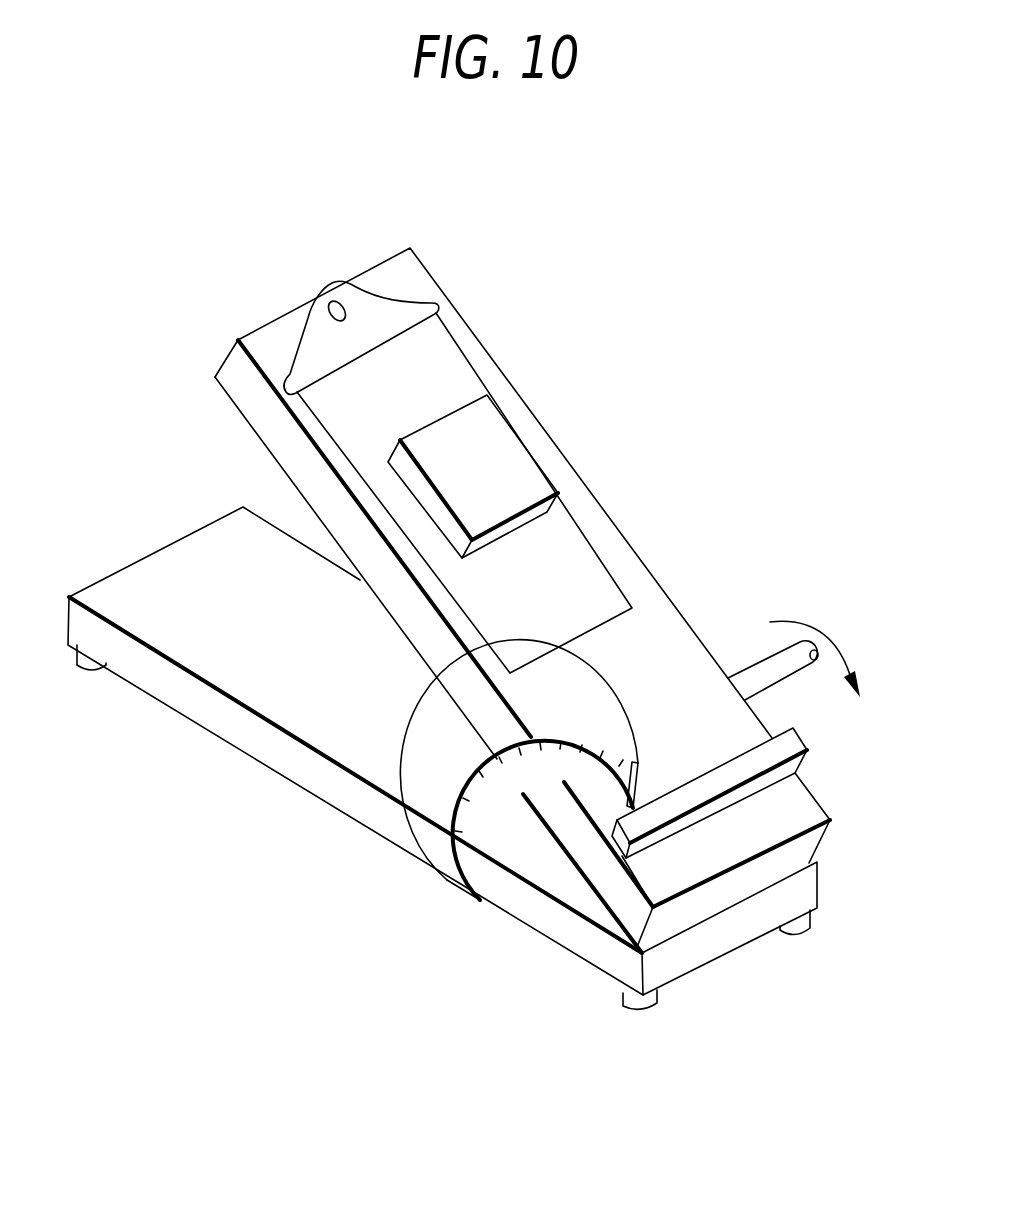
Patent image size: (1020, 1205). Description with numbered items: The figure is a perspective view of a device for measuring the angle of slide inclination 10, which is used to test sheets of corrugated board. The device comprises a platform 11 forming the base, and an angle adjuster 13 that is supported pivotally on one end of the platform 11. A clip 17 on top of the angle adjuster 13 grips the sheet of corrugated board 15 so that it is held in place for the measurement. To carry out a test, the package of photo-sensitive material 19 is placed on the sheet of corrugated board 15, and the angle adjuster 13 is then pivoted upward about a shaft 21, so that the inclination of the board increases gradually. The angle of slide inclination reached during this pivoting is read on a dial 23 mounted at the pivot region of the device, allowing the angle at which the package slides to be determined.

The device for measuring the angle of slide inclination 10 is at (710, 372).
The platform 11 is at (213, 648).
The angle adjuster 13 is at (270, 338).
The sheet of corrugated board 15 is at (567, 577).
The clip 17 is at (335, 283).
The package of photo-sensitive material 19 is at (493, 438).
The shaft 21 is at (777, 672).
The dial 23 is at (463, 880).